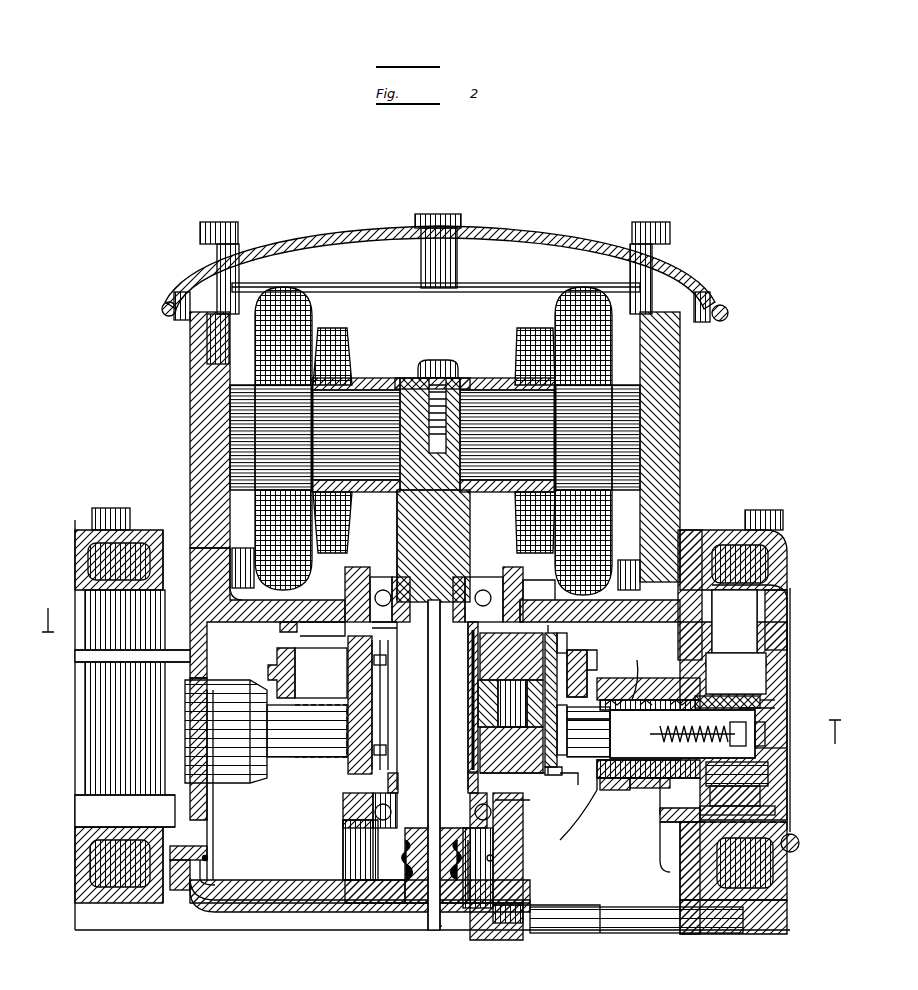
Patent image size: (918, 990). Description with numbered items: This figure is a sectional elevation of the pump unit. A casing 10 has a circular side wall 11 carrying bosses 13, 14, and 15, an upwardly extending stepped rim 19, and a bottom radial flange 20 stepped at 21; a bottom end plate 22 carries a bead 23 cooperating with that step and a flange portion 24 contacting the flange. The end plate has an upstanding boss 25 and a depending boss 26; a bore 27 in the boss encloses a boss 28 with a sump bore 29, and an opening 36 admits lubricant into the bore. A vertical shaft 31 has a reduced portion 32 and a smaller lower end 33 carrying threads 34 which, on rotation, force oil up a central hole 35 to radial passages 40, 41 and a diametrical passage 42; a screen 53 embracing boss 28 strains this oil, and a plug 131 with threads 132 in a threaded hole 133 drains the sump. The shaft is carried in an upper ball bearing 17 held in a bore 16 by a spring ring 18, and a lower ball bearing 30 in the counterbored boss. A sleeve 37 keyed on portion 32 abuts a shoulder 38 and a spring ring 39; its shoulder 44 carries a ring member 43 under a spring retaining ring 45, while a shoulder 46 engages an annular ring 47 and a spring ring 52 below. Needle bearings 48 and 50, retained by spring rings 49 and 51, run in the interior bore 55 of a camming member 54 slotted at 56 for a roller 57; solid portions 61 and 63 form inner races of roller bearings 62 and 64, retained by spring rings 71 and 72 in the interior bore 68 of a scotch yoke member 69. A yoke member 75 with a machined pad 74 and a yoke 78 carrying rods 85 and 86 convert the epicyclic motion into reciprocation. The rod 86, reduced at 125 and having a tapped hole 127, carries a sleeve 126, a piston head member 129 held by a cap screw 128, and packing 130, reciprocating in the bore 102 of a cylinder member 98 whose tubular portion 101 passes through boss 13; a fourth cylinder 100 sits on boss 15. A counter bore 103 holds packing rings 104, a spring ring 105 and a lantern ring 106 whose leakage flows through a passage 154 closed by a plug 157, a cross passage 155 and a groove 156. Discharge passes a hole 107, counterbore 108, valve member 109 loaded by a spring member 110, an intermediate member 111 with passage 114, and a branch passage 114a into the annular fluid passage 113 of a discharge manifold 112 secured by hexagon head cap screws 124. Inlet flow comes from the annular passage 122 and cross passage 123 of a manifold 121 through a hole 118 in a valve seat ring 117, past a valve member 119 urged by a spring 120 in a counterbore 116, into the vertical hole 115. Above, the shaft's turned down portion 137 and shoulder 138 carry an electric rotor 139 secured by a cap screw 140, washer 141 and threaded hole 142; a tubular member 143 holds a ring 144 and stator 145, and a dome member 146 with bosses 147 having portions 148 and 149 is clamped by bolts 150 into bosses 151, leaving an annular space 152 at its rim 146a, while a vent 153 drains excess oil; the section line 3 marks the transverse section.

The section line 3 is at (441, 684).
The casing 10 is at (188, 622).
The circular side wall 11 is at (213, 812).
The boss 13 is at (655, 790).
The boss 14 is at (300, 610).
The boss 15 is at (525, 588).
The central bore 16 is at (490, 575).
The ball bearing 17 is at (350, 636).
The spring ring 18 is at (372, 578).
The stepped rim 19 is at (236, 590).
The radial flange 20 is at (200, 855).
The step 21 is at (210, 858).
The bottom end plate 22 is at (258, 900).
The bead 23 is at (200, 880).
The flange portion 24 is at (178, 890).
The upstanding boss 25 is at (525, 836).
The depending boss 26 is at (420, 905).
The bore 27 is at (496, 857).
The boss 28 is at (462, 915).
The sump bore 29 is at (380, 905).
The ball bearing 30 is at (505, 802).
The vertical shaft 31 is at (474, 522).
The reduced diameter portion 32 is at (478, 783).
The lower end 33 is at (470, 872).
The threads 34 is at (440, 928).
The central hole 35 is at (468, 833).
The opening 36 is at (395, 853).
The sleeve 37 is at (412, 590).
The shoulder 38 is at (397, 575).
The spring ring 39 is at (481, 870).
The radial passage 40 is at (431, 735).
The radial passage 41 is at (420, 676).
The diametrical passage 42 is at (380, 622).
The ring member 43 is at (480, 626).
The shoulder 44 is at (503, 694).
The spring retaining ring 45 is at (386, 588).
The shoulder 46 is at (512, 782).
The annular ring 47 is at (388, 786).
The needle bearing 48 is at (525, 650).
The spring ring 49 is at (510, 703).
The needle bearing 50 is at (520, 740).
The spring ring 51 is at (512, 716).
The spring ring 52 is at (370, 832).
The screen 53 is at (350, 895).
The camming member 54 is at (350, 758).
The interior bore 55 is at (372, 700).
The slot 56 is at (540, 750).
The roller 57 is at (607, 713).
The solid portion 61 is at (540, 620).
The roller bearing 62 is at (566, 636).
The solid portion 63 is at (570, 774).
The roller bearing 64 is at (550, 779).
The interior bore 68 is at (592, 668).
The scotch yoke member 69 is at (348, 668).
The spring rings 71 is at (550, 640).
The spring rings 72 is at (562, 790).
The machined pad 74 is at (332, 655).
The yoke member 75 is at (282, 648).
The yoke 78 is at (330, 760).
The rod 85 is at (315, 755).
The rod 86 is at (610, 770).
The cylinder member 98 is at (778, 768).
The fourth cylinder 100 is at (85, 685).
The tubular portion 101 is at (628, 670).
The bore 102 is at (760, 700).
The counter bore 103 is at (665, 680).
The packing rings 104 is at (662, 812).
The spring ring 105 is at (607, 782).
The lantern ring 106 is at (650, 700).
The hole 107 is at (760, 684).
The counterbore 108 is at (764, 662).
The valve member 109 is at (764, 670).
The spring member 110 is at (762, 656).
The intermediate member 111 is at (752, 606).
The discharge manifold 112 is at (708, 546).
The annular fluid passage 113 is at (736, 550).
The passage 114 is at (760, 596).
The branch passage 114a is at (760, 586).
The vertical hole 115 is at (760, 750).
The counterbore 116 is at (762, 796).
The valve seat ring 117 is at (776, 812).
The hole 118 is at (776, 826).
The valve member 119 is at (662, 845).
The spring 120 is at (768, 772).
The manifold 121 is at (786, 876).
The annular passage 122 is at (735, 885).
The cross passage 123 is at (742, 838).
The hexagon head cap screws 124 is at (770, 520).
The reduced diameter portion 125 is at (648, 698).
The sleeve 126 is at (772, 704).
The tapped hole 127 is at (595, 815).
The cap screw 128 is at (756, 718).
The piston head member 129 is at (767, 735).
The packing 130 is at (662, 722).
The plug 131 is at (594, 920).
The threads 132 is at (540, 920).
The threaded hole 133 is at (510, 920).
The turned down portion 137 is at (485, 400).
The shoulder 138 is at (482, 470).
The electric rotor 139 is at (390, 385).
The cap screw 140 is at (437, 365).
The washer 141 is at (418, 378).
The threaded hole 142 is at (465, 380).
The tubular member 143 is at (668, 427).
The ring 144 is at (212, 397).
The stator 145 is at (228, 436).
The dome member 146 is at (515, 229).
The rim 146a is at (722, 314).
The bosses 147 is at (232, 280).
The portion 148 is at (230, 316).
The portion 149 is at (164, 302).
The bolts 150 is at (215, 230).
The bosses 151 is at (238, 580).
The annular space 152 is at (690, 320).
The vent 153 is at (684, 558).
The passage 154 is at (640, 790).
The cross passage 155 is at (672, 828).
The groove 156 is at (685, 880).
The plug 157 is at (610, 790).